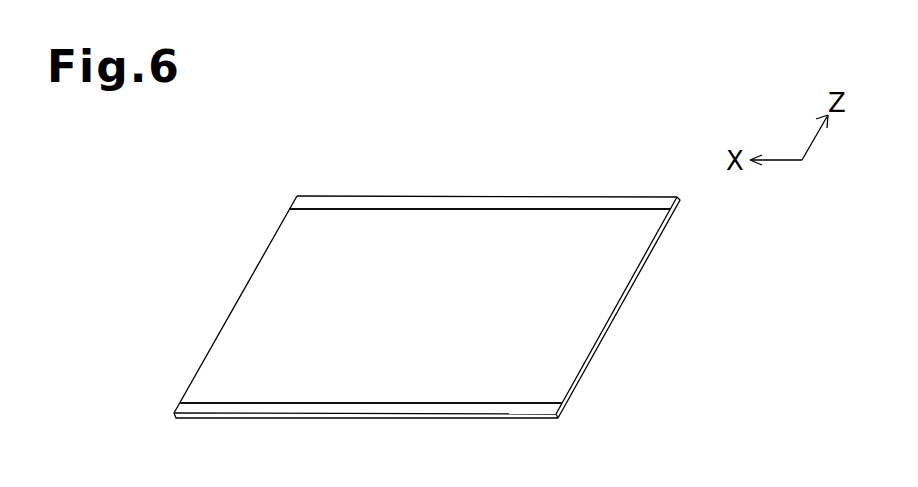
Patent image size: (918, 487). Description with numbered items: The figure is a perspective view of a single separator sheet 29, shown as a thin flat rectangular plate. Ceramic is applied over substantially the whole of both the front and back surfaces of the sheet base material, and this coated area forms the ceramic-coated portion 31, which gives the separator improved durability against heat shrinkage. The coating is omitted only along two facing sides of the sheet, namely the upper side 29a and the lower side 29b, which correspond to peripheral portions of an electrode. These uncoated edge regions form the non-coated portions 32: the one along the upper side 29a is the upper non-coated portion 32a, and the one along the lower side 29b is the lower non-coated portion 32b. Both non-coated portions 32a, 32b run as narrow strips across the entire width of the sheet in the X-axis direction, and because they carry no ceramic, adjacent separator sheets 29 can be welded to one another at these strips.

The separator sheet 29 is at (645, 262).
The upper side 29a is at (612, 197).
The lower side 29b is at (513, 420).
The ceramic-coated portion 31 is at (593, 324).
The non-coated portion 32 is at (452, 202).
The upper non-coated portion 32a is at (479, 179).
The lower non-coated portion 32b is at (371, 434).